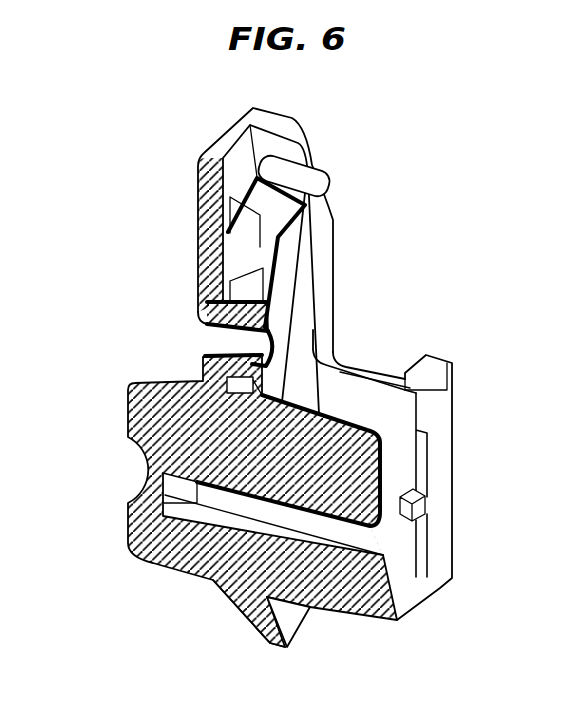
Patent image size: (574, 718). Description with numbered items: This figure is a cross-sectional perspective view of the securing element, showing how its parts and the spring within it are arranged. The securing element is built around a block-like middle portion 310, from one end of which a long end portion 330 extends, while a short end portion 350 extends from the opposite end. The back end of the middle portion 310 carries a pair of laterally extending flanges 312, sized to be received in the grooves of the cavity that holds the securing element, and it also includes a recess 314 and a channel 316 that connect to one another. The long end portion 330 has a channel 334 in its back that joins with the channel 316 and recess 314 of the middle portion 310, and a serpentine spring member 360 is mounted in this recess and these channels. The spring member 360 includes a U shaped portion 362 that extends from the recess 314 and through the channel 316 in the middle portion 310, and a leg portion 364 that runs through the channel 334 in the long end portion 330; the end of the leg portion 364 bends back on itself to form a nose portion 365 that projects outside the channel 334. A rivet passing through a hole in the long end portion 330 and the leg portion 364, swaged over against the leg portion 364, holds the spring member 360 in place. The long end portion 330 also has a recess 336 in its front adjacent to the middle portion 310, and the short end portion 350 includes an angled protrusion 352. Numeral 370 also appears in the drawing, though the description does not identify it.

The middle portion 310 is at (127, 531).
The laterally extending flanges 312 is at (435, 363).
The recess 314 is at (407, 541).
The channel 316 is at (420, 458).
The long end portion 330 is at (197, 233).
The channel 334 is at (308, 330).
The recess 336 is at (225, 340).
The short end portion 350 is at (293, 625).
The angled protrusion 352 is at (245, 609).
The serpentine spring member 360 is at (285, 247).
The U shaped portion 362 is at (400, 417).
The leg portion 364 is at (287, 296).
The nose portion 365 is at (317, 178).
The contact strip 370 is at (222, 328).